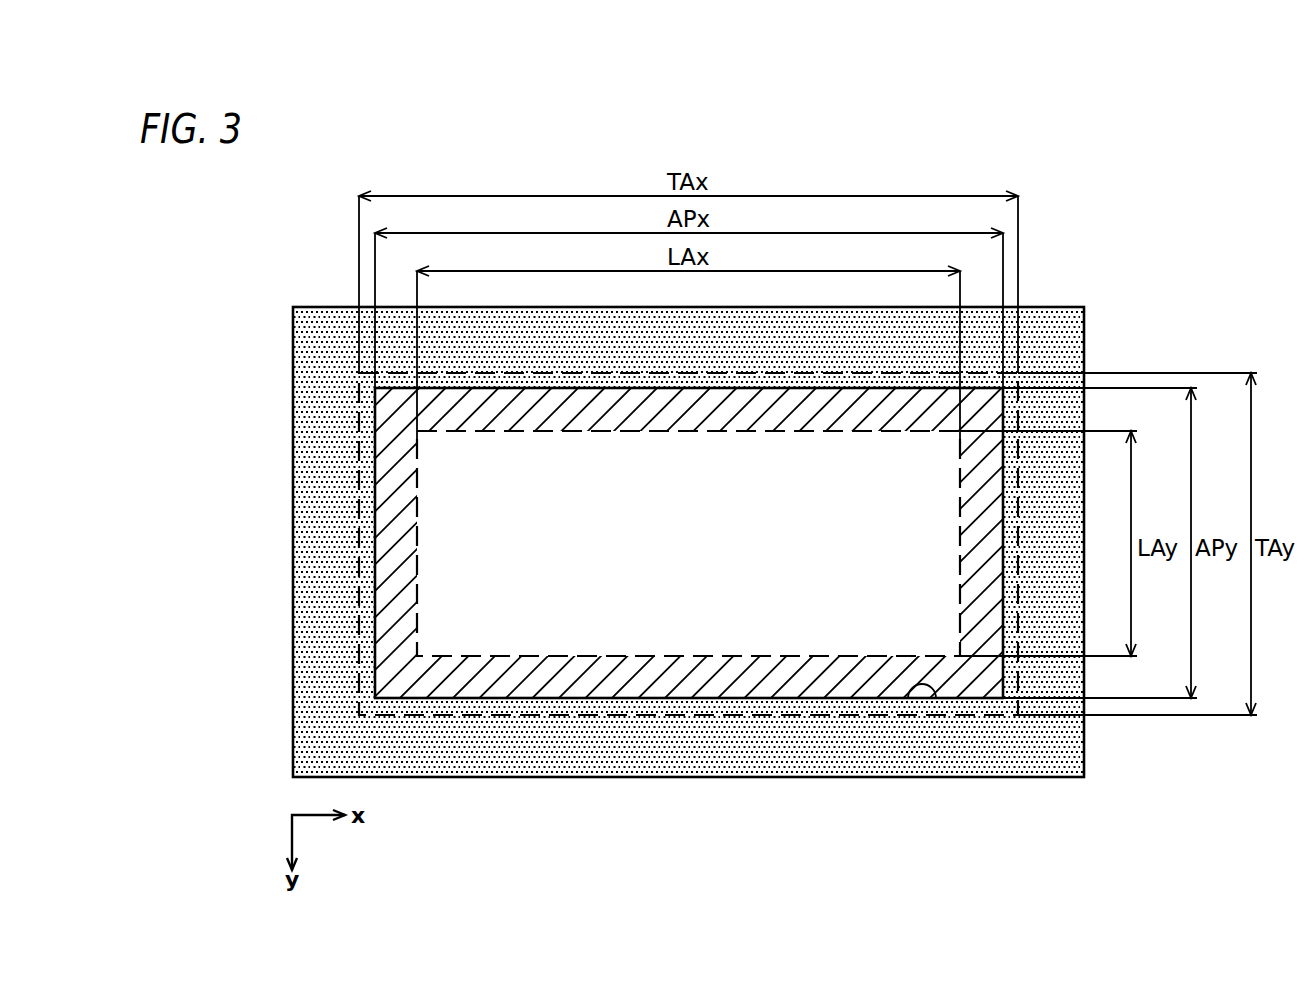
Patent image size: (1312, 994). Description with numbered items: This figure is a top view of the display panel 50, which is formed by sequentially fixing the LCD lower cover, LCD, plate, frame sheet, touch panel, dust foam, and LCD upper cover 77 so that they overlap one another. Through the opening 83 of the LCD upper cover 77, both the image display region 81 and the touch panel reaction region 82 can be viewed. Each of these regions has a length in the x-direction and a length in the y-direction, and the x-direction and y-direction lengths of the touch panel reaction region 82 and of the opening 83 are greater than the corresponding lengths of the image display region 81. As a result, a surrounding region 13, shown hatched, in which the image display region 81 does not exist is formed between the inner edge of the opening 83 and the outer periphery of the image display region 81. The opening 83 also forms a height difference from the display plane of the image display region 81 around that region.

The display panel 50 is at (1086, 276).
The LCD upper cover 77 is at (612, 755).
The surrounding region 13 is at (505, 668).
The image display region 81 is at (823, 657).
The touch panel reaction region 82 is at (717, 715).
The opening 83 is at (939, 697).